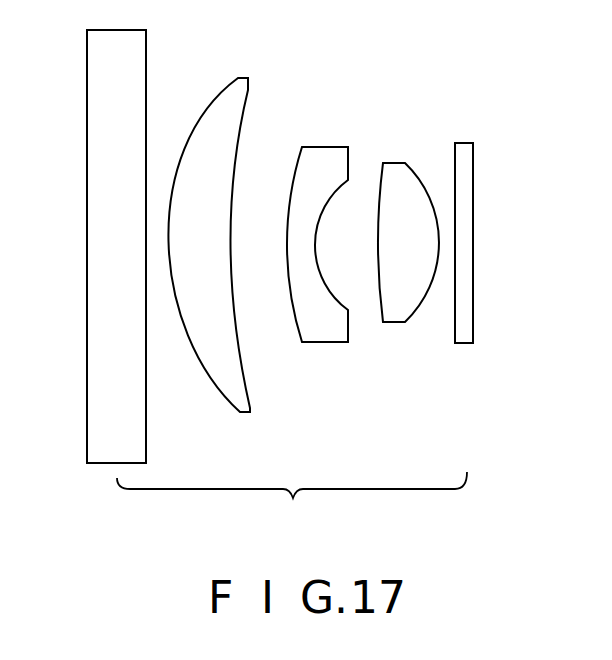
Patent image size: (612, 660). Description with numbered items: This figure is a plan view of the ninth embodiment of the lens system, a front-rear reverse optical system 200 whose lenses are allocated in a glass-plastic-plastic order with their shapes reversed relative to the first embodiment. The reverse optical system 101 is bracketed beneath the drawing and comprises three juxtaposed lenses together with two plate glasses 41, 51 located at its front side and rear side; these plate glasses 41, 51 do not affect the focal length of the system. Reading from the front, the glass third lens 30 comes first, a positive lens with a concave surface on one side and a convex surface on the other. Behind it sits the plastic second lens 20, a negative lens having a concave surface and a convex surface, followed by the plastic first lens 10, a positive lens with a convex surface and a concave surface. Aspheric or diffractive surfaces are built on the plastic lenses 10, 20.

The plate glass 41 is at (93, 307).
The third lens 30 is at (212, 357).
The second lens 20 is at (330, 333).
The first lens 10 is at (398, 318).
The plate glass 51 is at (467, 210).
The front-rear reverse optical system 200 is at (453, 104).
The reverse optical system 101 is at (292, 504).